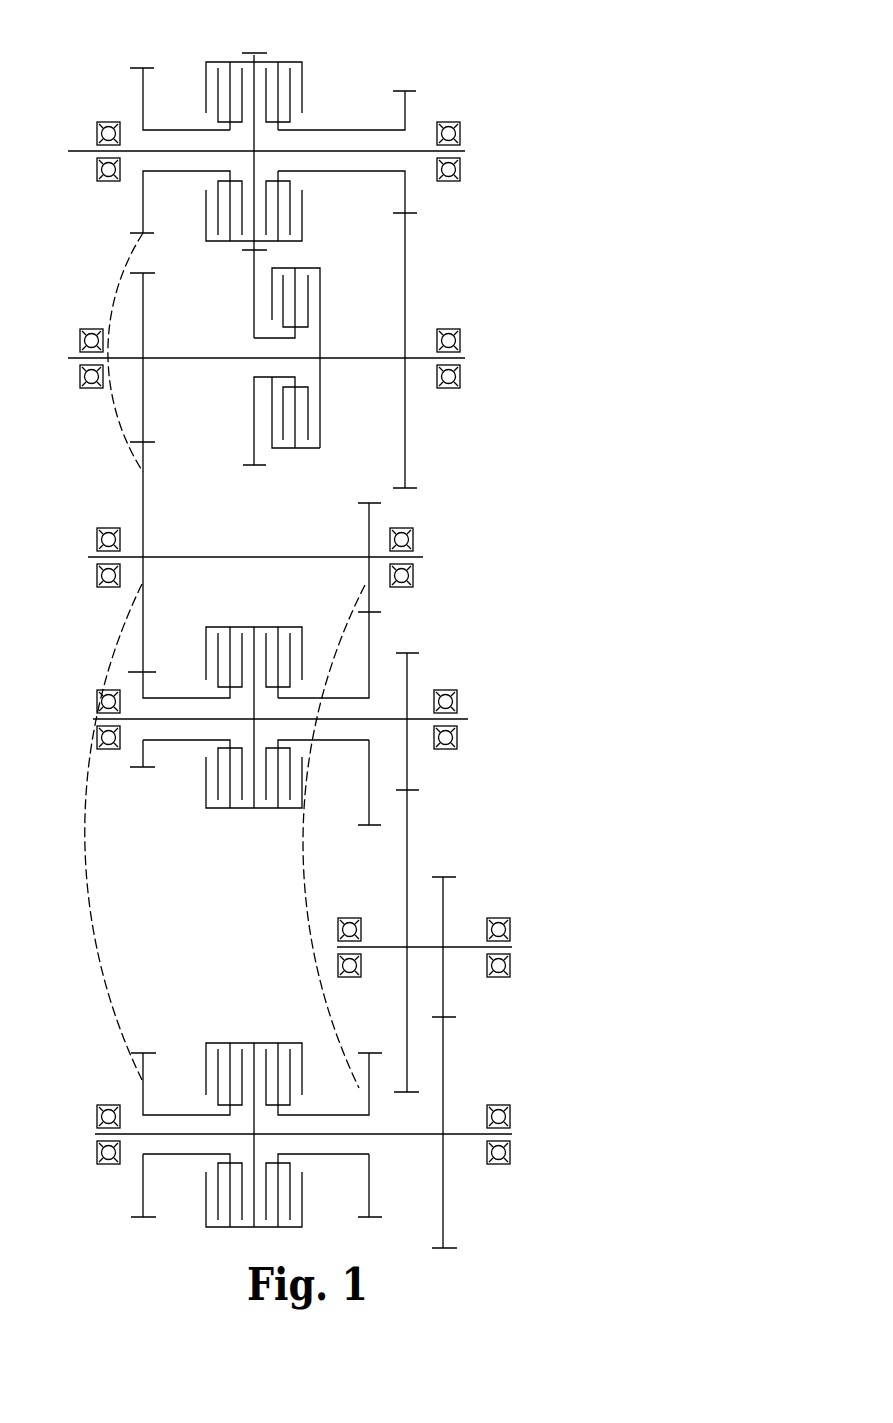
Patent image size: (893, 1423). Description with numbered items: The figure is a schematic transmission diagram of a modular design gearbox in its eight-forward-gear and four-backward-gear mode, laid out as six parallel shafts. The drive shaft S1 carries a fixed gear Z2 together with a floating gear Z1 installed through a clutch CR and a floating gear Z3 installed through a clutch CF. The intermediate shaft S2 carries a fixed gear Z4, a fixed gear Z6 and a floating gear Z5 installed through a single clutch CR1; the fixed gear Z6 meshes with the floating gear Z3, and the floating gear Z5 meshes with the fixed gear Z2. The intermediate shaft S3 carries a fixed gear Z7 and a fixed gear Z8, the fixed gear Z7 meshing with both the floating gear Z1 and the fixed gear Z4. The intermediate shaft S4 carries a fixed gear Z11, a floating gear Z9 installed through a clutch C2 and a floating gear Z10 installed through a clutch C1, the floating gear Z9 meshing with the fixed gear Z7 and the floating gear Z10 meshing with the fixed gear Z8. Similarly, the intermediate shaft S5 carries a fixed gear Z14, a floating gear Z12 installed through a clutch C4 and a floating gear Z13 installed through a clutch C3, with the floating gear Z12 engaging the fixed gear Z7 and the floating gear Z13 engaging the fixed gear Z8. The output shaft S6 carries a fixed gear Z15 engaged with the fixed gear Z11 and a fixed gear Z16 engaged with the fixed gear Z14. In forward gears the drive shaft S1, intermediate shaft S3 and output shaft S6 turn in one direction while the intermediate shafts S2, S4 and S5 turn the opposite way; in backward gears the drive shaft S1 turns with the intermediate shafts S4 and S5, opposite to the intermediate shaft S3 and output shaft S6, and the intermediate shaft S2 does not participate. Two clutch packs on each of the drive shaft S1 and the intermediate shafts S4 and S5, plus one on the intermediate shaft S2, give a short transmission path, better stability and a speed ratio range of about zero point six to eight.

The drive shaft S1 is at (285, 151).
The intermediate shaft S2 is at (285, 358).
The intermediate shaft S3 is at (272, 557).
The intermediate shaft S4 is at (298, 719).
The intermediate shaft S5 is at (320, 1134).
The output shaft S6 is at (443, 947).
The clutch CR is at (216, 137).
The clutch CF is at (283, 137).
The clutch CR1 is at (303, 358).
The clutch C1 is at (317, 704).
The clutch C2 is at (215, 684).
The clutch C3 is at (324, 1123).
The clutch C4 is at (216, 1123).
The floating gear Z1 is at (180, 99).
The fixed gear Z2 is at (254, 181).
The floating gear Z3 is at (347, 110).
The fixed gear Z4 is at (147, 357).
The floating gear Z5 is at (275, 422).
The fixed gear Z6 is at (352, 329).
The fixed gear Z7 is at (148, 501).
The fixed gear Z8 is at (329, 600).
The floating gear Z9 is at (147, 756).
The floating gear Z10 is at (359, 784).
The fixed gear Z11 is at (416, 721).
The floating gear Z12 is at (152, 1186).
The floating gear Z13 is at (379, 1186).
The fixed gear Z14 is at (454, 1133).
The fixed gear Z15 is at (416, 941).
The fixed gear Z16 is at (455, 947).